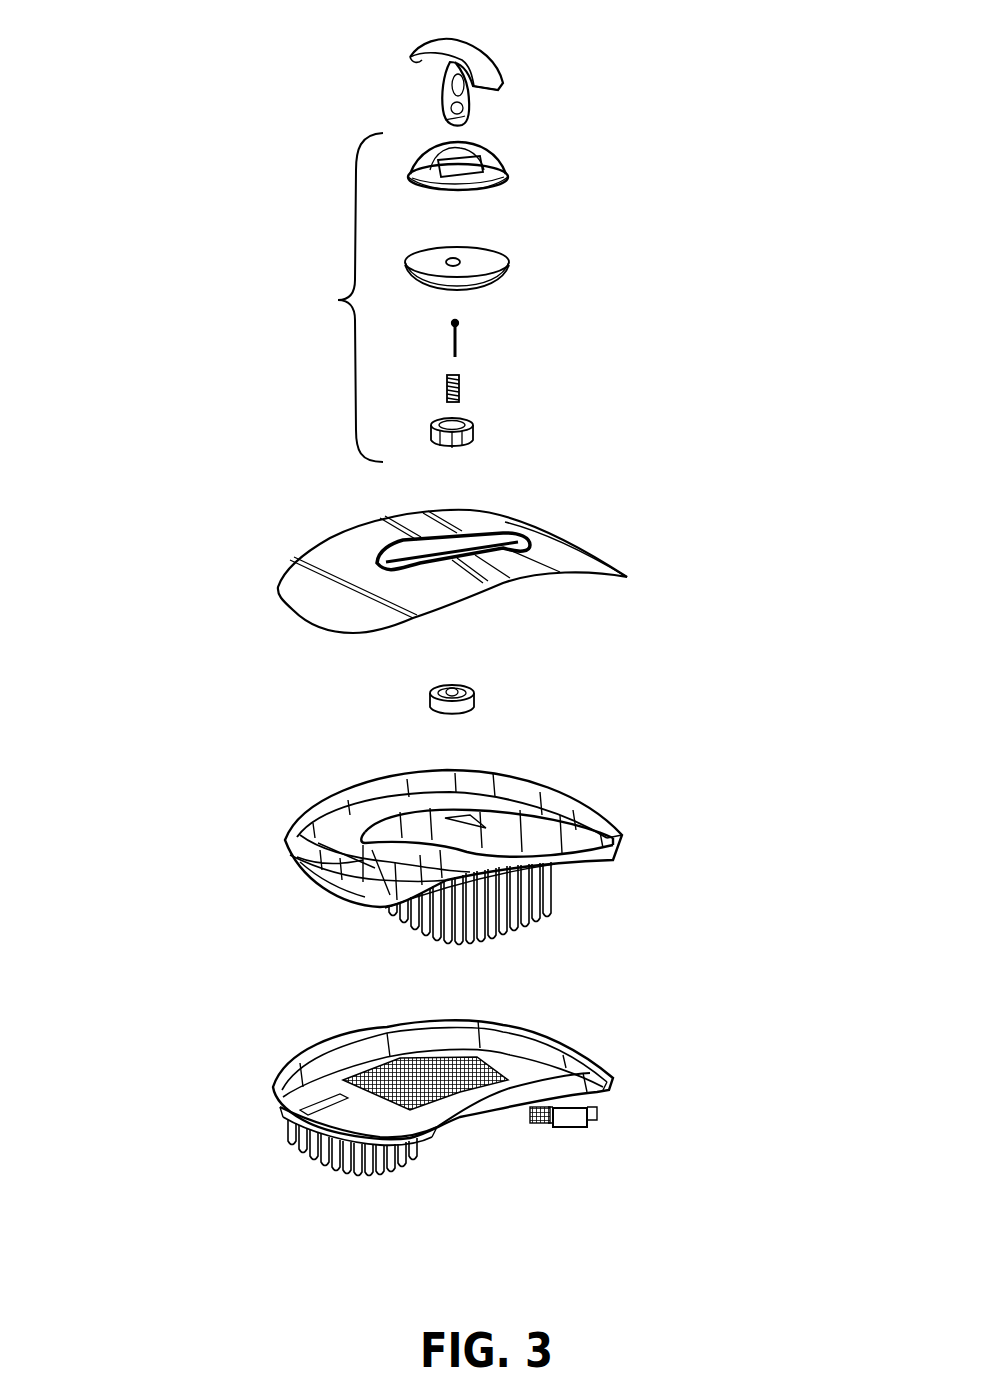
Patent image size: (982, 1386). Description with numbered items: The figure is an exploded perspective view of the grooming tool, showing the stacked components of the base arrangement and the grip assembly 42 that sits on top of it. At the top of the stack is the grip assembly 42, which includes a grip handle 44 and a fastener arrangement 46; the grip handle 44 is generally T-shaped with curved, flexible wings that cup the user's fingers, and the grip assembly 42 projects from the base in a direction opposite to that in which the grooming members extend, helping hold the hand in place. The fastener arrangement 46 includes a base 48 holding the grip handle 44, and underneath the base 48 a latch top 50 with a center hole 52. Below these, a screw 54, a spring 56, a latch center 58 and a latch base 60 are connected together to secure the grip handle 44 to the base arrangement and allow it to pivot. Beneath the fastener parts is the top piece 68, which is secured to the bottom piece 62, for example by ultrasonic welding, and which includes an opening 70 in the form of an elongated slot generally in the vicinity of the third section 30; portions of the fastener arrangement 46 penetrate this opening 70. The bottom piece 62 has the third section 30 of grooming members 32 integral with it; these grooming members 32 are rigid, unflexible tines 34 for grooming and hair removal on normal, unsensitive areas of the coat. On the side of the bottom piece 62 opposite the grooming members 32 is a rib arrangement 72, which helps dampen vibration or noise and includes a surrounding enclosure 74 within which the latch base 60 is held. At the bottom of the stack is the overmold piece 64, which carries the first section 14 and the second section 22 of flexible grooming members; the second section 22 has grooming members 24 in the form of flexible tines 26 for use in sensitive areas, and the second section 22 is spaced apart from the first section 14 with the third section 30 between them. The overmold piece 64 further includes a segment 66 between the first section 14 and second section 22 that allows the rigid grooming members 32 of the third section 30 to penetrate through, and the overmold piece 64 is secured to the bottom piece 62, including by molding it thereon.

The first section 14 is at (574, 1167).
The second section 22 is at (378, 1222).
The grooming members 24 is at (300, 1165).
The flexible tines 26 is at (340, 1170).
The third section 30 is at (541, 946).
The grooming members 32 is at (410, 923).
The rigid tines 34 is at (548, 888).
The grip assembly 42 is at (666, 128).
The grip handle 44 is at (482, 63).
The fastener arrangement 46 is at (461, 297).
The base 48 is at (500, 170).
The latch top 50 is at (493, 262).
The center hole 52 is at (448, 258).
The screw 54 is at (462, 338).
The spring 56 is at (462, 388).
The latch center 58 is at (478, 432).
The latch base 60 is at (477, 695).
The bottom piece 62 is at (295, 772).
The overmold piece 64 is at (603, 1041).
The segment 66 is at (380, 1060).
The top piece 68 is at (267, 506).
The opening 70 is at (498, 537).
The rib arrangement 72 is at (505, 805).
The surrounding enclosure 74 is at (373, 855).